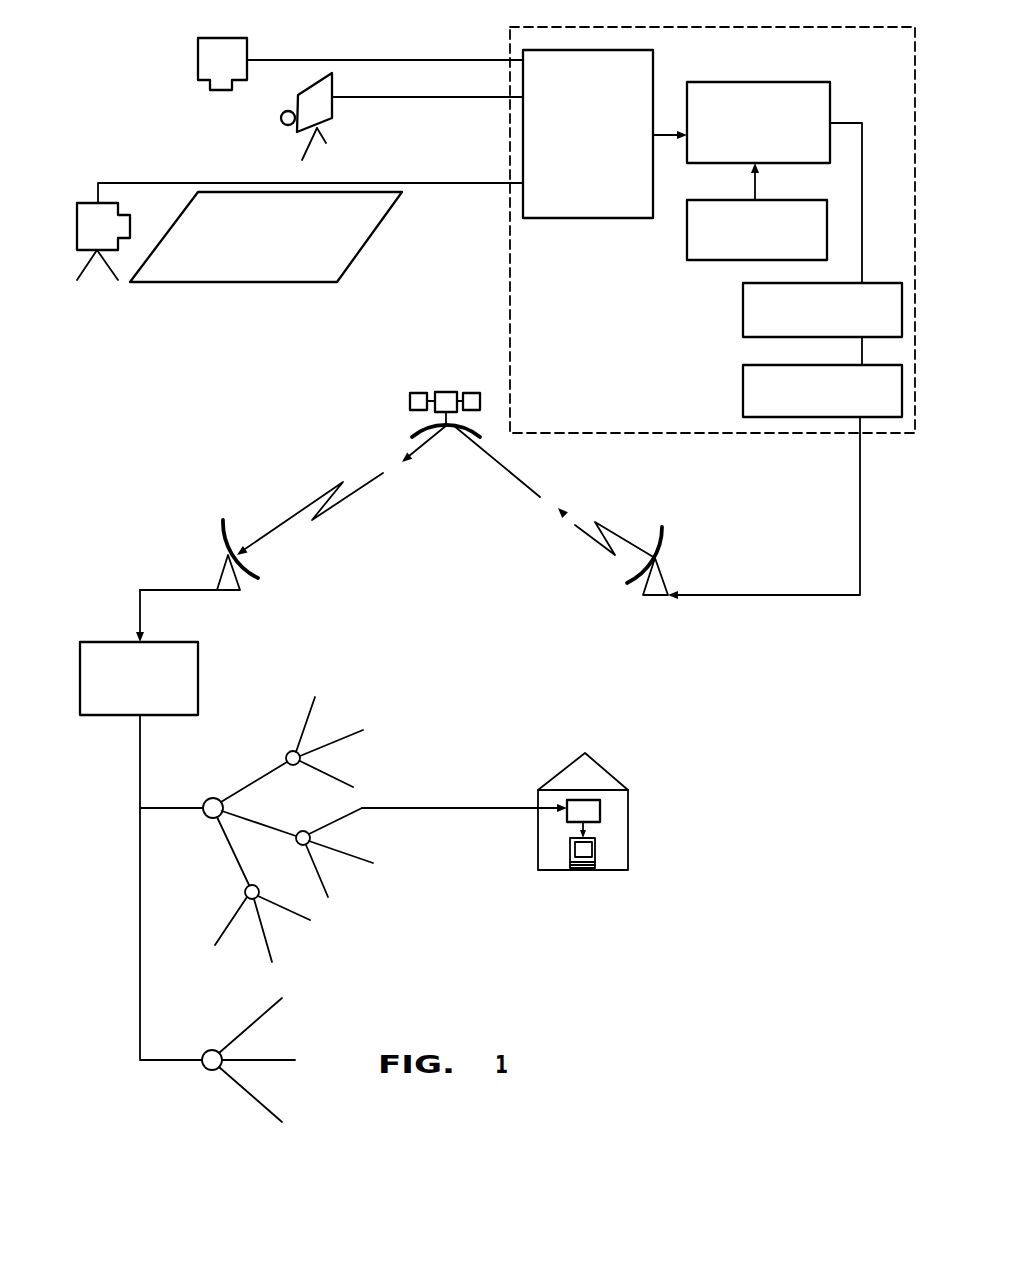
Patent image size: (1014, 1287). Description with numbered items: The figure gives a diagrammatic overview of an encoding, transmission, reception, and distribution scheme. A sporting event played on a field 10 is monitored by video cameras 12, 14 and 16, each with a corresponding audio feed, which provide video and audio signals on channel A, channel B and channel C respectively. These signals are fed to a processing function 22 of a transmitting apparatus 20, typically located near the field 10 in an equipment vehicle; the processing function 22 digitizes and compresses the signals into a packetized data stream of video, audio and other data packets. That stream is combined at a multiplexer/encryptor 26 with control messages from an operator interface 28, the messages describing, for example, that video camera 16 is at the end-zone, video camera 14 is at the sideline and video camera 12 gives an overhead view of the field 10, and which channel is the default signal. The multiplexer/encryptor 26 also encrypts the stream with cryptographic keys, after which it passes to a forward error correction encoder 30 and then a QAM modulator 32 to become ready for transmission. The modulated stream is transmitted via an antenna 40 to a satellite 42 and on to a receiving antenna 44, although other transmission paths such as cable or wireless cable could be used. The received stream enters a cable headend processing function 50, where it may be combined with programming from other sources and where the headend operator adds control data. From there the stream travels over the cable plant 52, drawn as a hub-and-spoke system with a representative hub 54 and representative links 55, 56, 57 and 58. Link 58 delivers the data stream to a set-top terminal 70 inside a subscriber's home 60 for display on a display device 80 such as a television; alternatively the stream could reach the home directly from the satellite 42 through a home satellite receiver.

The field 10 is at (237, 283).
The video camera 12 is at (207, 37).
The video camera 14 is at (297, 132).
The video camera 16 is at (93, 203).
The transmitting apparatus 20 is at (628, 436).
The processing function 22 is at (613, 220).
The multiplexer/encryptor 26 is at (718, 82).
The operator interface 28 is at (703, 262).
The forward error correction (FEC) encoder 30 is at (743, 320).
The QAM modulator 32 is at (743, 390).
The antenna 40 is at (660, 597).
The satellite 42 is at (445, 390).
The antenna 44 is at (230, 593).
The cable headend processing function 50 is at (198, 655).
The cable plant 52 is at (120, 860).
The hub 54 is at (205, 820).
The link 55 is at (260, 777).
The link 56 is at (258, 820).
The link 57 is at (230, 843).
The link 58 is at (427, 807).
The subscriber's home 60 is at (608, 767).
The set-top terminal 70 is at (600, 810).
The display device 80 is at (585, 870).